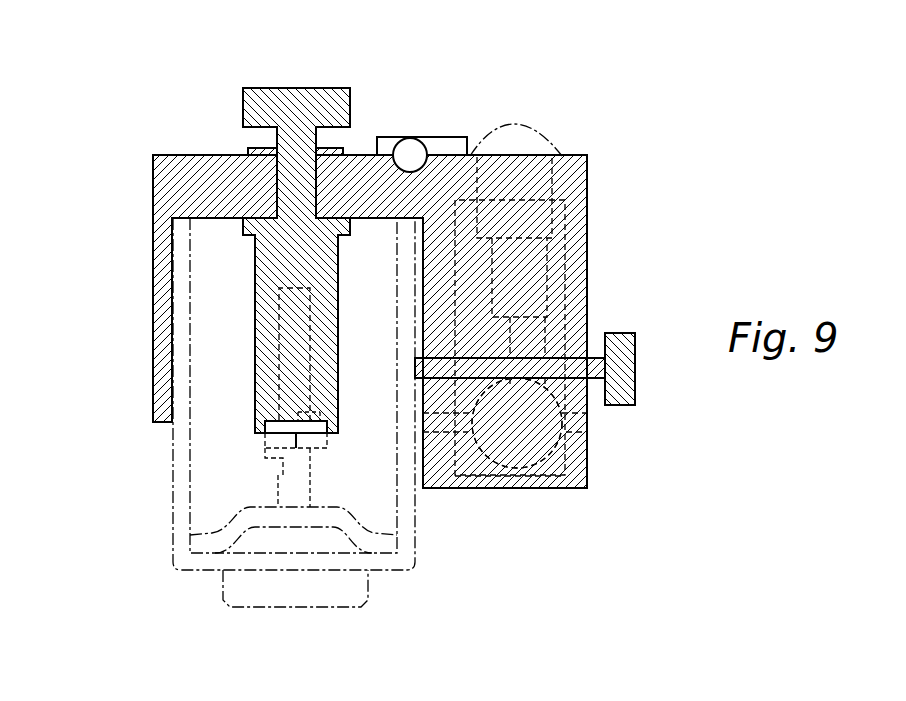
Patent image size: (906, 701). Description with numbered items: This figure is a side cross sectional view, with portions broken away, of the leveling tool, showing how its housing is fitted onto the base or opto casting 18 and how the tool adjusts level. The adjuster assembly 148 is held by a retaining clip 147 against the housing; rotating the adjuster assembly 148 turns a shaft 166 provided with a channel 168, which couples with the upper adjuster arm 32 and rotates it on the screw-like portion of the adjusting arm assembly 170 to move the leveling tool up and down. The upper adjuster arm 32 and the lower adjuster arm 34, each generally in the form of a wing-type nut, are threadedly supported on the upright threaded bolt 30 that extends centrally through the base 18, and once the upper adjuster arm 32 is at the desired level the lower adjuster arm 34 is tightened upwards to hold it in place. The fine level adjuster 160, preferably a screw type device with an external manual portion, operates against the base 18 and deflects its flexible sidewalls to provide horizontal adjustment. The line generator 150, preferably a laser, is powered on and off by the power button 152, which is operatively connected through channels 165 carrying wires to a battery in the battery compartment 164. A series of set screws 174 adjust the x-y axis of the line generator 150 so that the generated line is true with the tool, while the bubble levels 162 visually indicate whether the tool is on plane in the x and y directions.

The adjuster assembly 148 is at (273, 88).
The retaining clip 147 is at (250, 149).
The bubble levels 162 is at (406, 140).
The power button 152 is at (520, 125).
The battery compartment 164 is at (587, 272).
The channels 165 is at (587, 318).
The fine level adjuster 160 is at (636, 383).
The set screws 174 is at (587, 455).
The line generator 150 is at (560, 490).
The shaft 166 is at (250, 305).
The upright threaded bolt 30 is at (255, 363).
The upper adjuster arm 32 is at (270, 430).
The lower adjuster arm 34 is at (265, 448).
The base or opto casting 18 is at (173, 487).
The adjusting arm assembly 170 is at (250, 503).
The channel 168 is at (293, 427).